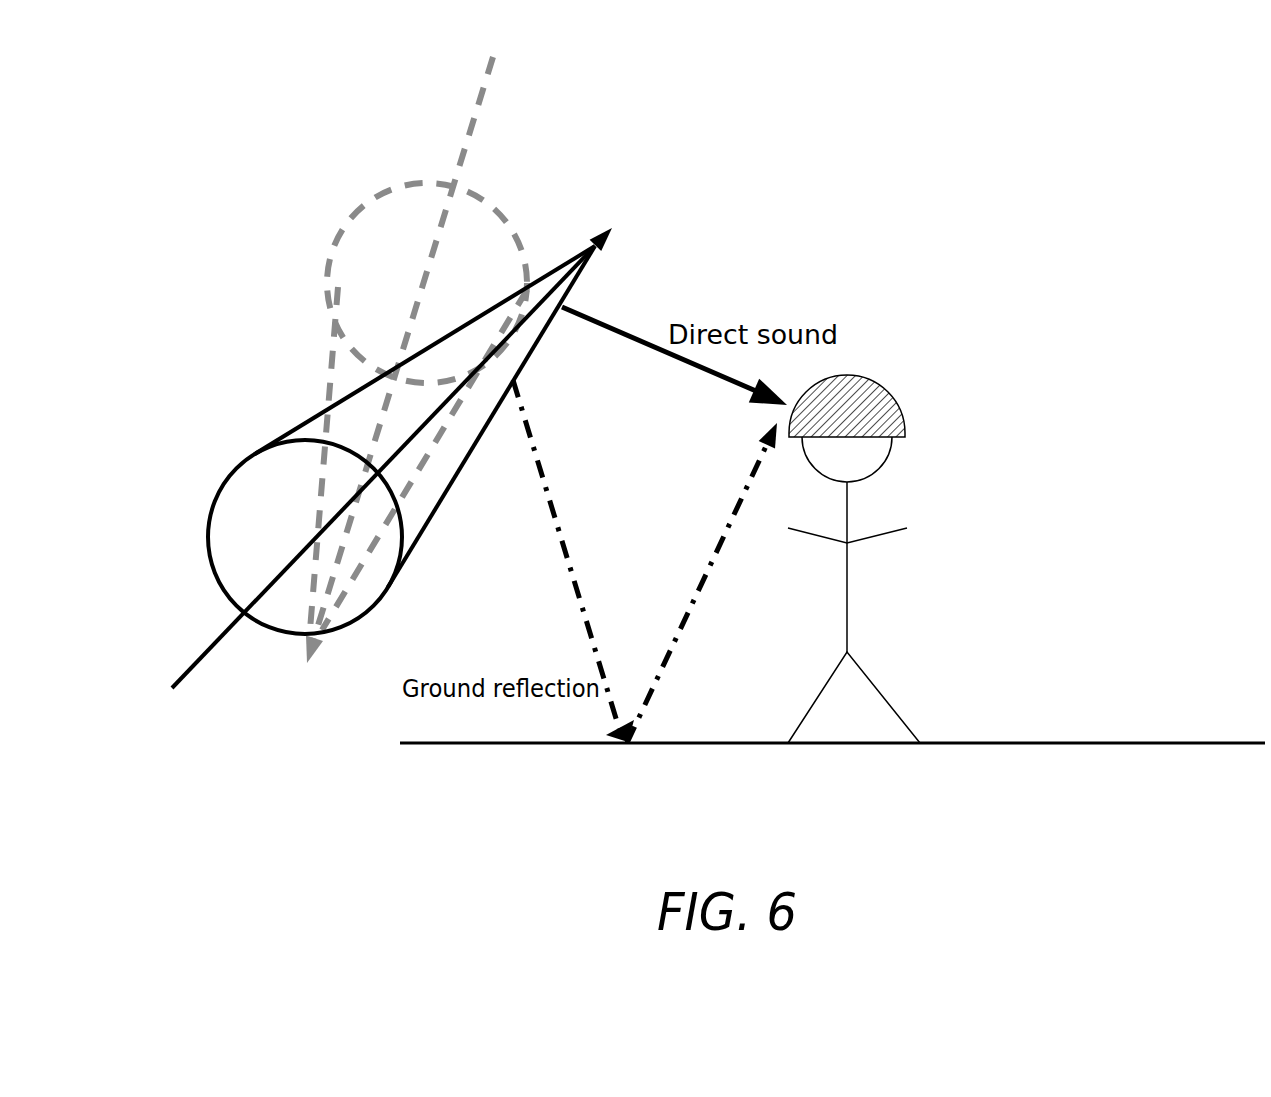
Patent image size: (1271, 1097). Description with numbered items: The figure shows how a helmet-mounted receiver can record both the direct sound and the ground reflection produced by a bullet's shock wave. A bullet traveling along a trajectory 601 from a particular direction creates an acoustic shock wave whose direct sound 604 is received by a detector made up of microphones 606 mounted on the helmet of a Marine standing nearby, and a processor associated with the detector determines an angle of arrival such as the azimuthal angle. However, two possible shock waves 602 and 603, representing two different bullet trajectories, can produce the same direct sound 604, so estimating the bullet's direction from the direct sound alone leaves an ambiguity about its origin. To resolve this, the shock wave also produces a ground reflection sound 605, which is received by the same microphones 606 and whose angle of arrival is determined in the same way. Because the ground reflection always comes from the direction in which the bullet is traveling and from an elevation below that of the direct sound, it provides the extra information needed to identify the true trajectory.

The bullet trajectory 601 is at (190, 663).
The first possible shock wave 602 is at (218, 490).
The second possible shock wave 603 is at (370, 193).
The direct sound 604 is at (593, 325).
The ground reflection sound 605 is at (593, 635).
The microphones 606 is at (773, 417).